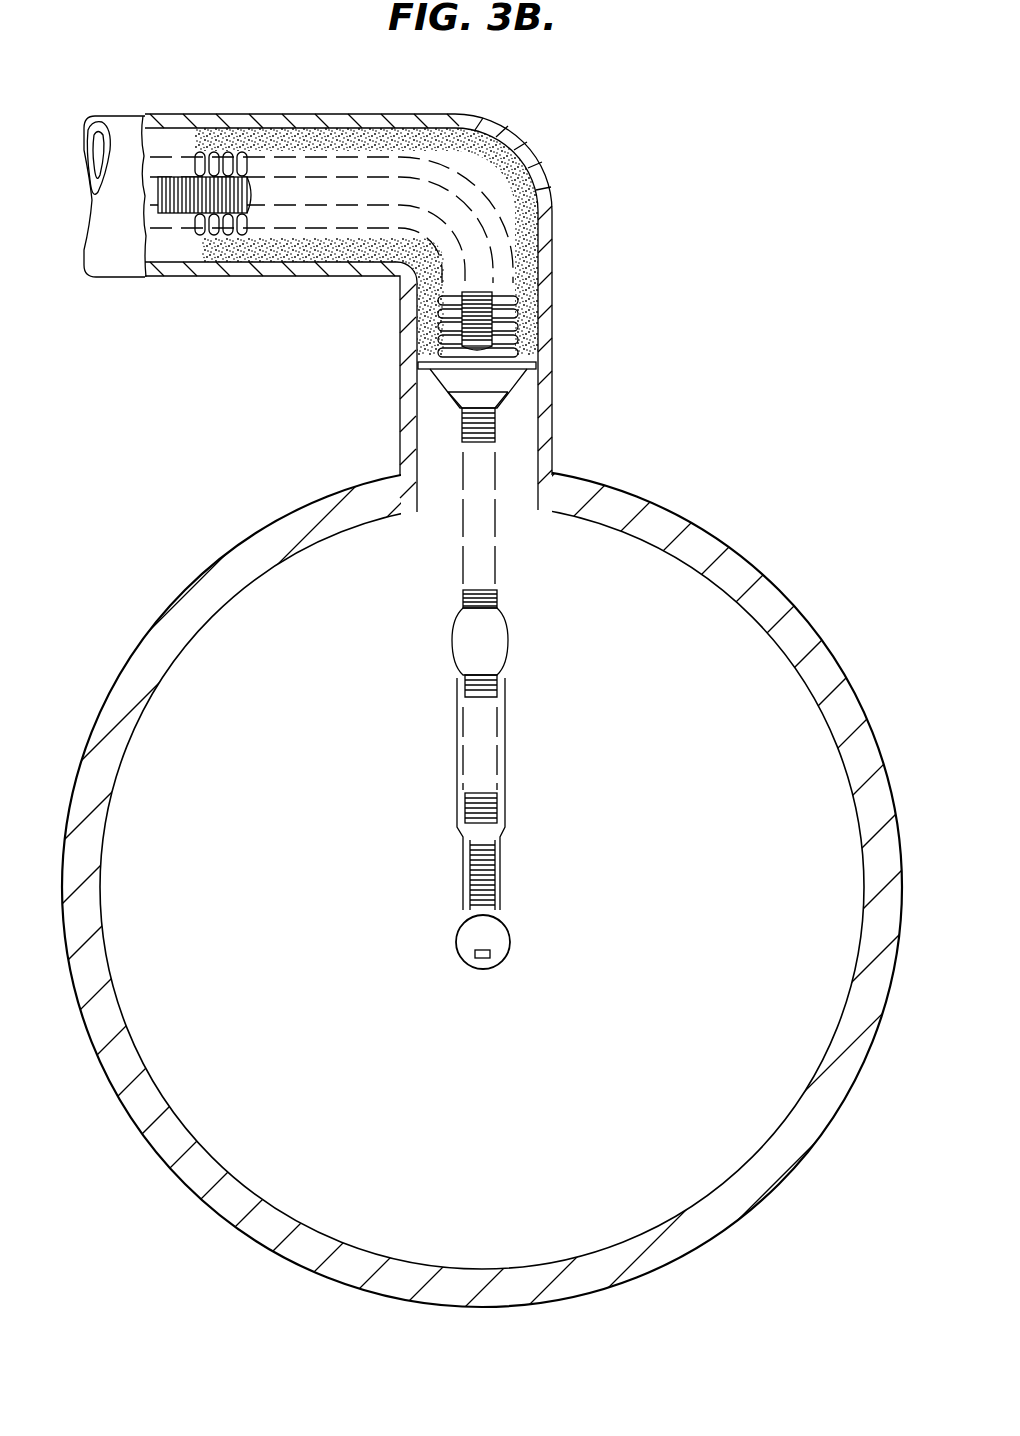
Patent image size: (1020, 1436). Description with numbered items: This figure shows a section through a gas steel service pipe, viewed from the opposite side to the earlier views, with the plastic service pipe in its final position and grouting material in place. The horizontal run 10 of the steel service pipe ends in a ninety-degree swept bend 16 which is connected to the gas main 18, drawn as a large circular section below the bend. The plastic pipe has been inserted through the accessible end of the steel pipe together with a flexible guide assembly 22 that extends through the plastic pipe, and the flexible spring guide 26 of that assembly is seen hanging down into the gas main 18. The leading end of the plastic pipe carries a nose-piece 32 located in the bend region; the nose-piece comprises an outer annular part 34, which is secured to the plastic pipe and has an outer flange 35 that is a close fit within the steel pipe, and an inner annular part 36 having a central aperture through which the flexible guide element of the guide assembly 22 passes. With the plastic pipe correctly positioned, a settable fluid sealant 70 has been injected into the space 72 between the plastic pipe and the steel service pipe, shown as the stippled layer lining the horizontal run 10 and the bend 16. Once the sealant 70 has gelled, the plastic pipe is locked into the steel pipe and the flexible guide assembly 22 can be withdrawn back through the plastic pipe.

The horizontal run 10 is at (233, 270).
The swept bend 16 is at (535, 168).
The gas main 18 is at (590, 497).
The flexible guide assembly 22 is at (450, 561).
The flexible spring guide 26 is at (445, 747).
The nose-piece 32 is at (425, 390).
The outer annular part 34 is at (503, 381).
The outer flange 35 is at (533, 343).
The inner annular part 36 is at (492, 401).
The settable fluid sealant 70 is at (300, 130).
The space 72 is at (184, 142).